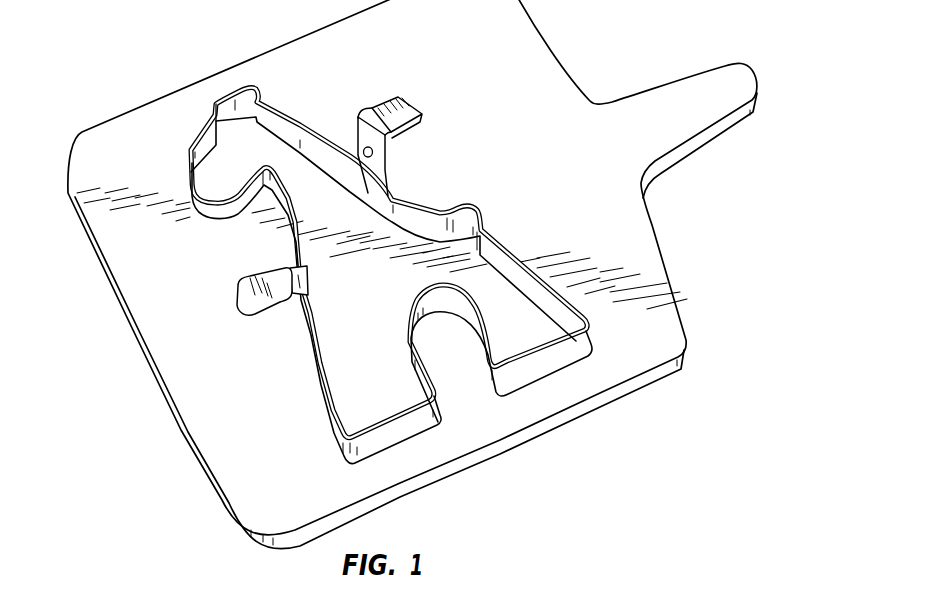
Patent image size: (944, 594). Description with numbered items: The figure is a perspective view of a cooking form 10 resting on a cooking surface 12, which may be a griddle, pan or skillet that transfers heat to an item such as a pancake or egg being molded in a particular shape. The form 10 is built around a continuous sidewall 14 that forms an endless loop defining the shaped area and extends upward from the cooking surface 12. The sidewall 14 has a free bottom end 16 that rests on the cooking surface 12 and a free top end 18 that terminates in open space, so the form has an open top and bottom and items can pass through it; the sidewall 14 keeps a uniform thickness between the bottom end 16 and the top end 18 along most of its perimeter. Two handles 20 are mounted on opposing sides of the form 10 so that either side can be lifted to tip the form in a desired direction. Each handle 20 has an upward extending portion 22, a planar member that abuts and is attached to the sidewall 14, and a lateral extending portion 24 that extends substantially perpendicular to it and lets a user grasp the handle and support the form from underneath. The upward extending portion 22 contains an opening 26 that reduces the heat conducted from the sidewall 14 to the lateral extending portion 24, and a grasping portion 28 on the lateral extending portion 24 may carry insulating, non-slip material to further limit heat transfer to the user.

The cooking form 10 is at (400, 274).
The cooking surface 12 is at (620, 240).
The continuous sidewall 14 is at (472, 281).
The free bottom end 16 is at (548, 366).
The free top end 18 is at (583, 321).
The handle 20 is at (237, 298).
The upward extending portion 22 is at (386, 173).
The lateral extending portion 24 is at (410, 132).
The opening 26 is at (374, 153).
The grasping portion 28 is at (407, 97).